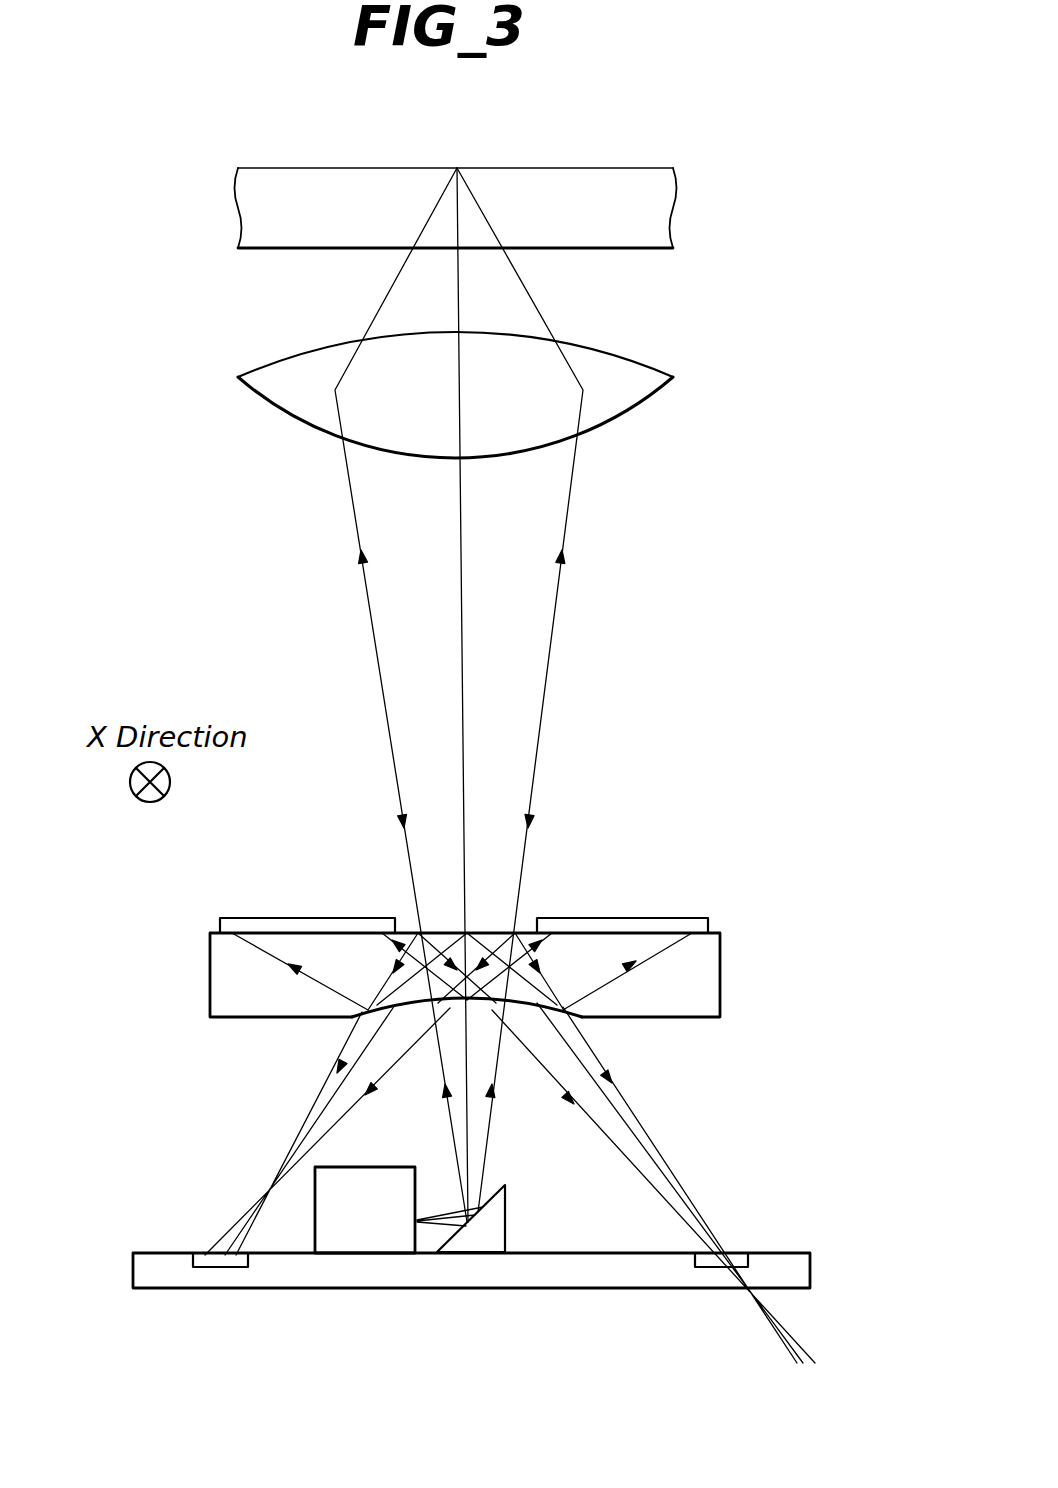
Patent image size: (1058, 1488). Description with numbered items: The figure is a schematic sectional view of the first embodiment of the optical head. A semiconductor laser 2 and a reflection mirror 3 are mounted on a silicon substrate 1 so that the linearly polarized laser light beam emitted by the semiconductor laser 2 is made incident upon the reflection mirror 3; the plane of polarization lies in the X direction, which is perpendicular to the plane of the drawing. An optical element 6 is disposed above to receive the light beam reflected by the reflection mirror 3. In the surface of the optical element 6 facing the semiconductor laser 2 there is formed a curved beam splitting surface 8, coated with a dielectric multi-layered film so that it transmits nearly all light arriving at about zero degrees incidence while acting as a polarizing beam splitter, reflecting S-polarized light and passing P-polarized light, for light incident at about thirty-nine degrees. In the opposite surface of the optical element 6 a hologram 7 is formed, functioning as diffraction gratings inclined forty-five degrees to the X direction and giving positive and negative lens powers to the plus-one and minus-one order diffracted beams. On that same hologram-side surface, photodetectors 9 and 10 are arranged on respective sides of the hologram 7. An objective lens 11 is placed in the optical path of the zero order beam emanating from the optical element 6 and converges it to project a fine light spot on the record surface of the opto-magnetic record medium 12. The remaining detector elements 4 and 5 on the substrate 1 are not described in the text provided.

The silicon substrate 1 is at (797, 1267).
The semiconductor laser 2 is at (378, 1167).
The reflection mirror 3 is at (505, 1212).
The photodetector 4 is at (202, 1256).
The photodetector 5 is at (738, 1252).
The optical element 6 is at (722, 975).
The hologram 7 is at (490, 932).
The curved beam splitting surface 8 is at (533, 1012).
The photodetector 9 is at (285, 918).
The photodetector 10 is at (680, 918).
The objective lens 11 is at (628, 411).
The opto-magnetic record medium 12 is at (630, 168).